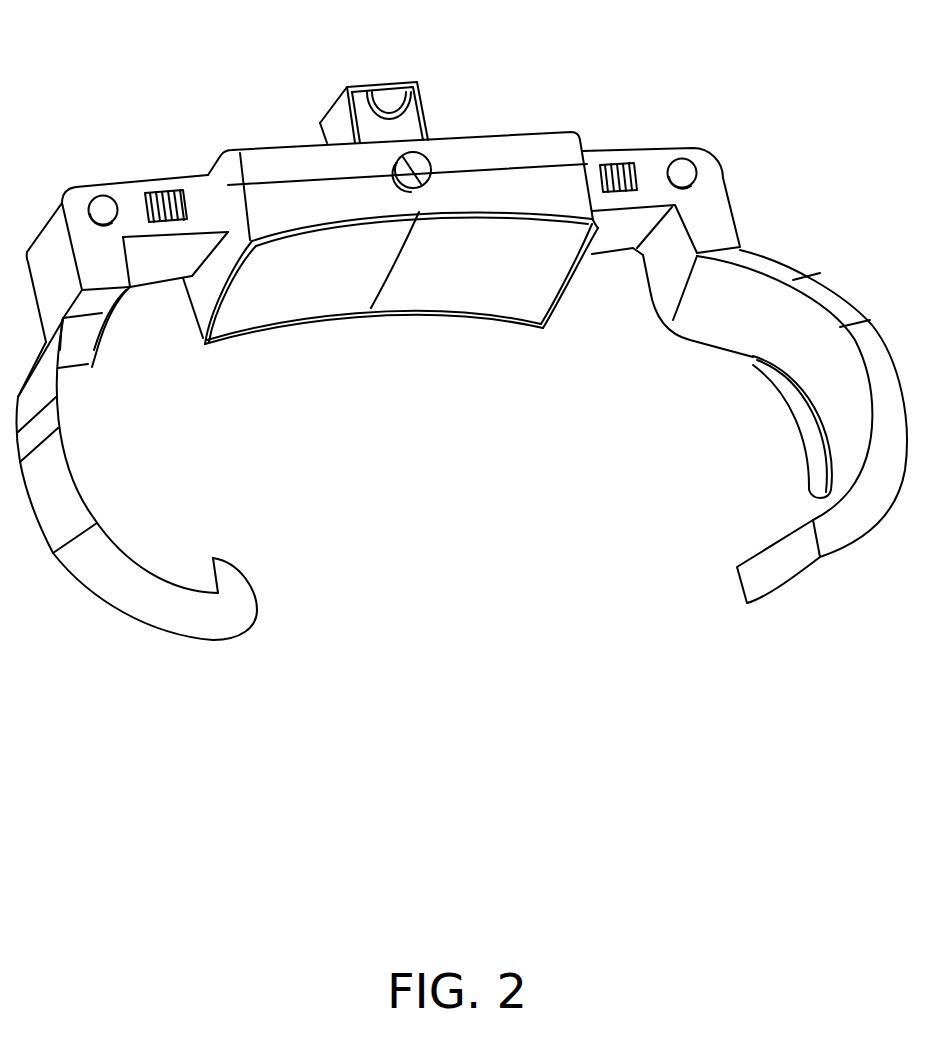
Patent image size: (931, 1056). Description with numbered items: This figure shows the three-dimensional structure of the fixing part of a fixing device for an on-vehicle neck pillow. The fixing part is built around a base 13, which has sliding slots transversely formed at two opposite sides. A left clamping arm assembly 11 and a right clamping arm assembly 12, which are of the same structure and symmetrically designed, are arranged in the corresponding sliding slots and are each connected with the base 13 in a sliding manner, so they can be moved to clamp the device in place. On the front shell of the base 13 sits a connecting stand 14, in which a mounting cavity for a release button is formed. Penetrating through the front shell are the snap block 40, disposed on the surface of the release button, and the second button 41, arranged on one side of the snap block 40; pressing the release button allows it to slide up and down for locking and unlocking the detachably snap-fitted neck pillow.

The left clamping arm assembly 11 is at (137, 210).
The right clamping arm assembly 12 is at (705, 202).
The base 13 is at (498, 152).
The connecting stand 14 is at (415, 87).
The snap block 40 is at (385, 103).
The second button 41 is at (403, 163).